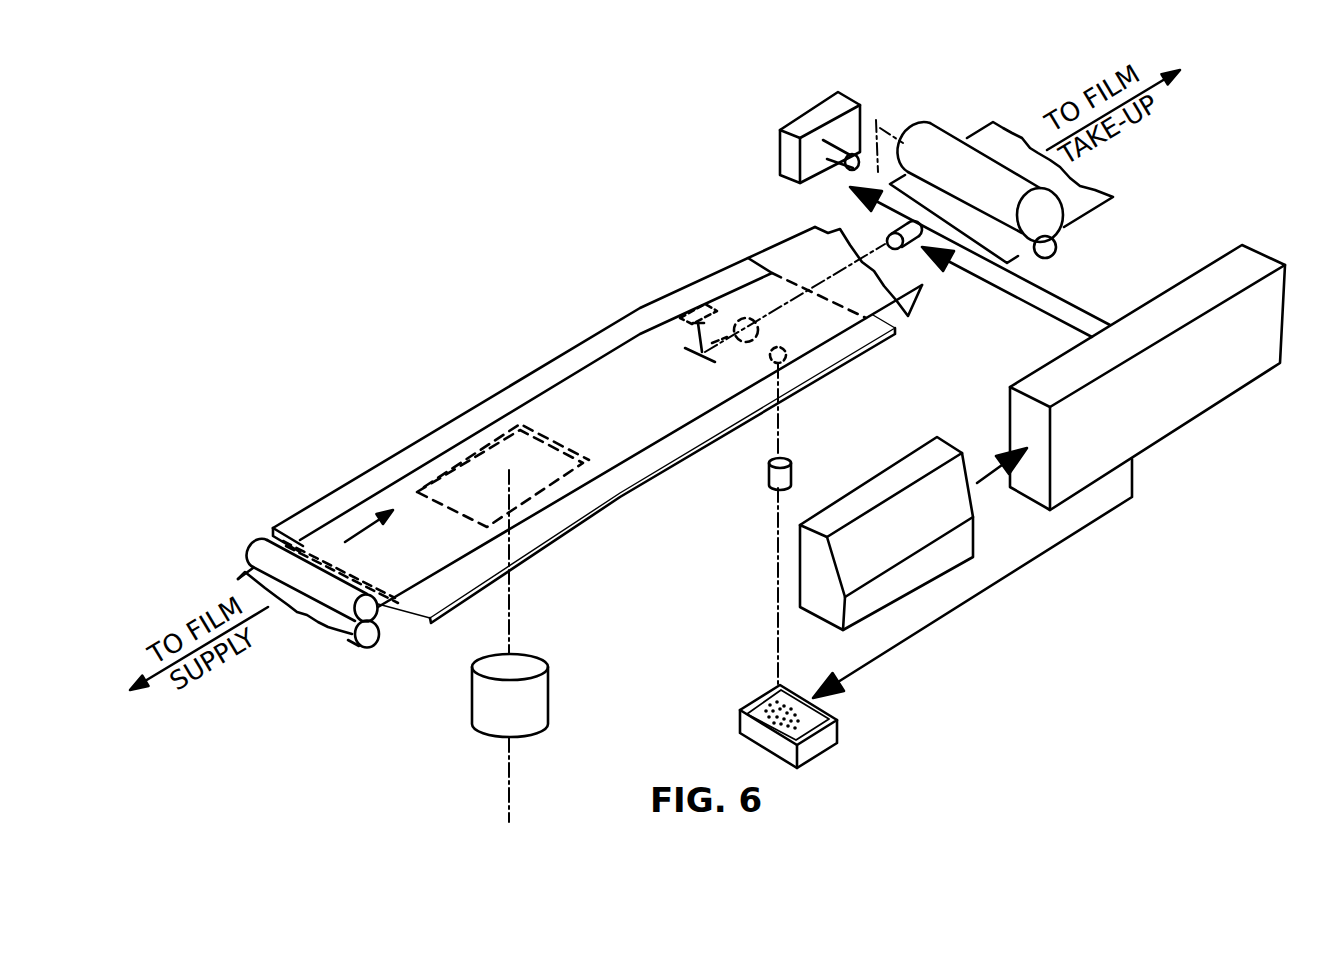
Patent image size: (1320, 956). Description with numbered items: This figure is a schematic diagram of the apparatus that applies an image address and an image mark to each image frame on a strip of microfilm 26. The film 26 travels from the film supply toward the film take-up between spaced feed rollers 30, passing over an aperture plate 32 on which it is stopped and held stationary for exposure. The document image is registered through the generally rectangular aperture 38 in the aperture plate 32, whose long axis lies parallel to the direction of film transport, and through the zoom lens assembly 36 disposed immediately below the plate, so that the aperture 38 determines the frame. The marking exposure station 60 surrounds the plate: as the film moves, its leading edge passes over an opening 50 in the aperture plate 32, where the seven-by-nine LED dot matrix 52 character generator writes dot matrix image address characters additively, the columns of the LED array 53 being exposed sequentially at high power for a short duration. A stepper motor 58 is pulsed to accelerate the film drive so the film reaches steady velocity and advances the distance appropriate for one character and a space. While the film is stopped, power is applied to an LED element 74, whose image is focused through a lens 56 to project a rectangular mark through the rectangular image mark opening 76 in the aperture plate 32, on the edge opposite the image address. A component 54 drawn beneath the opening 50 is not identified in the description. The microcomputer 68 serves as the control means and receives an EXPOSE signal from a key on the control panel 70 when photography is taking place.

The microfilm 26 is at (412, 478).
The feed rollers 30 is at (402, 640).
The aperture plate 32 is at (540, 378).
The zoom lens assembly 36 is at (548, 686).
The aperture 38 is at (502, 467).
The opening 50 is at (787, 357).
The LED dot matrix 52 is at (757, 731).
The LED array 53 is at (810, 710).
The punch 54 is at (773, 482).
The lens 56 is at (747, 317).
The stepper motor 58 is at (780, 157).
The marking exposure station 60 is at (740, 370).
The microcomputer 68 is at (1011, 382).
The control panel 70 is at (858, 479).
The LED element 74 is at (887, 237).
The rectangular image mark opening 76 is at (685, 303).